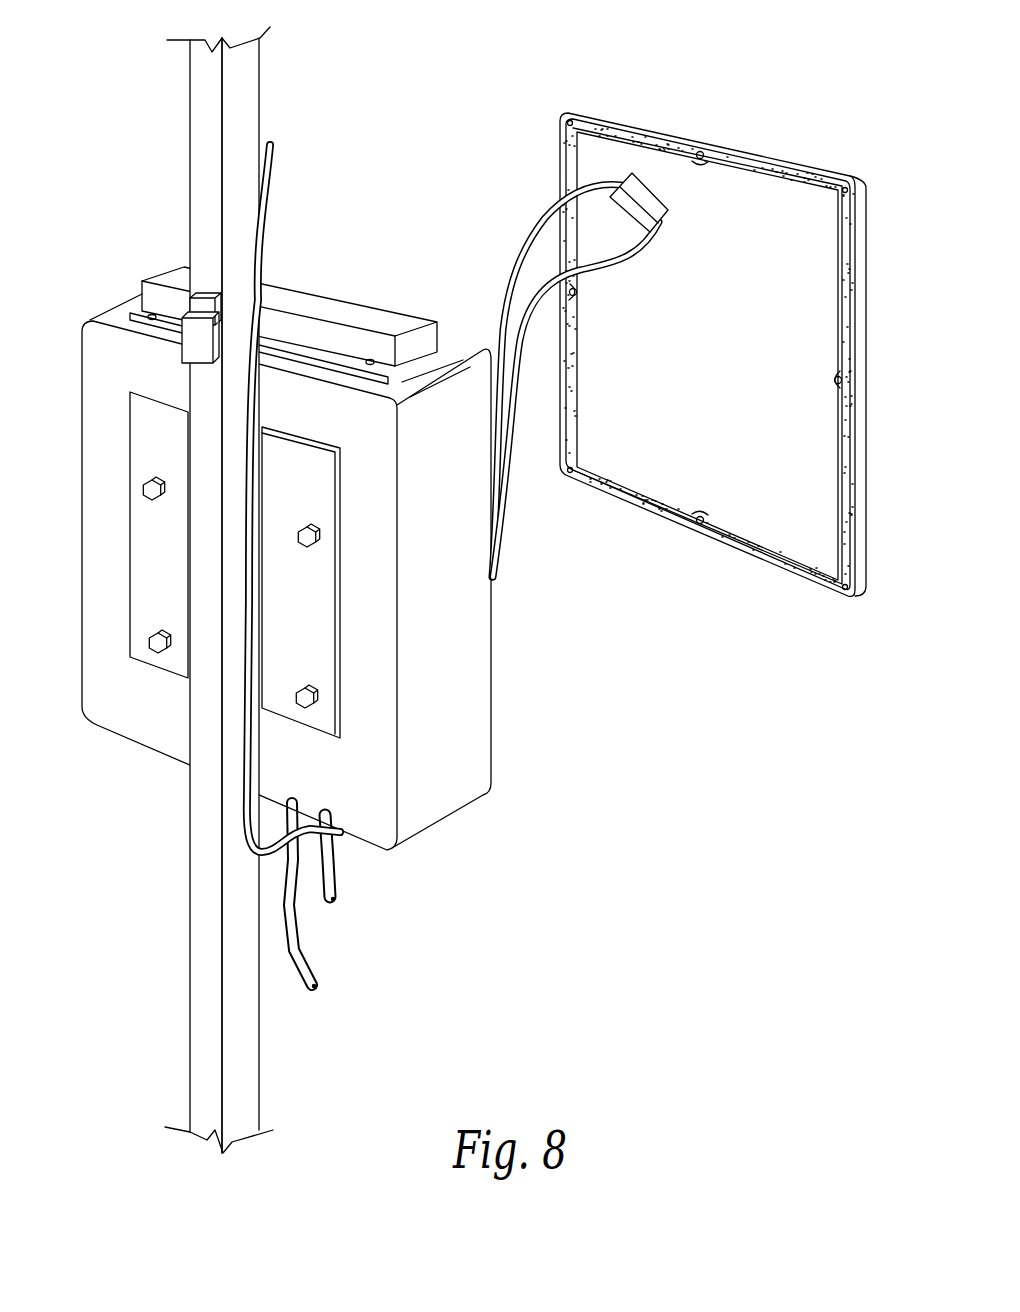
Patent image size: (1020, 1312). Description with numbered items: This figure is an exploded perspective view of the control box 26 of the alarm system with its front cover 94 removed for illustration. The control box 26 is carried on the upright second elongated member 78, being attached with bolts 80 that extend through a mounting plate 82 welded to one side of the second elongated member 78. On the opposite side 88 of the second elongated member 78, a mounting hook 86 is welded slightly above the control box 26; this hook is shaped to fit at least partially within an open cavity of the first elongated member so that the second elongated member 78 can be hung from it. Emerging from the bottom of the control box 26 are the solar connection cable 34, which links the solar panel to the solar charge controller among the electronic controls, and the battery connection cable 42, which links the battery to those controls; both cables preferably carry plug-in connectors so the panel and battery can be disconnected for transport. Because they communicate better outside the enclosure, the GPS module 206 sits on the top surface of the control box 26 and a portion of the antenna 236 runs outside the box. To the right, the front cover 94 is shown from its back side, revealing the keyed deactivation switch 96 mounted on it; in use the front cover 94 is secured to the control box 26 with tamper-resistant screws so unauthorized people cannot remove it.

The control box 26 is at (480, 663).
The solar connection cable 34 is at (295, 970).
The battery connection cable 42 is at (333, 870).
The second elongated member 78 is at (245, 97).
The bolts 80 is at (150, 501).
The mounting plate 82 is at (300, 494).
The mounting hook 86 is at (188, 340).
The side 88 is at (205, 163).
The front cover 94 is at (715, 369).
The keyed deactivation switch 96 is at (657, 203).
The GPS module 206 is at (330, 303).
The antenna 236 is at (272, 183).